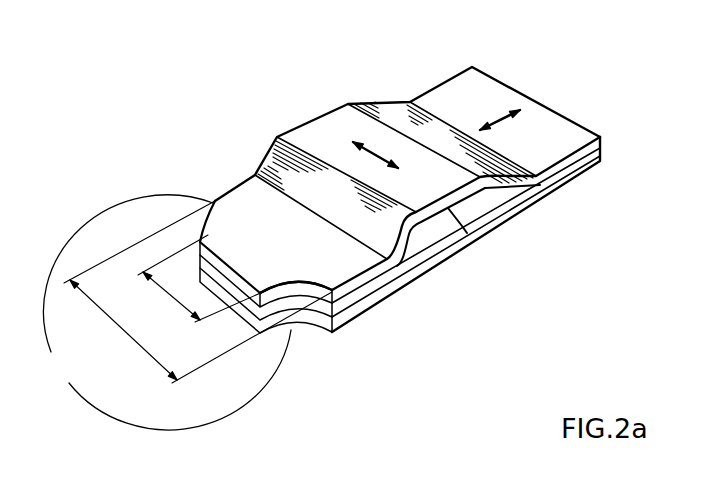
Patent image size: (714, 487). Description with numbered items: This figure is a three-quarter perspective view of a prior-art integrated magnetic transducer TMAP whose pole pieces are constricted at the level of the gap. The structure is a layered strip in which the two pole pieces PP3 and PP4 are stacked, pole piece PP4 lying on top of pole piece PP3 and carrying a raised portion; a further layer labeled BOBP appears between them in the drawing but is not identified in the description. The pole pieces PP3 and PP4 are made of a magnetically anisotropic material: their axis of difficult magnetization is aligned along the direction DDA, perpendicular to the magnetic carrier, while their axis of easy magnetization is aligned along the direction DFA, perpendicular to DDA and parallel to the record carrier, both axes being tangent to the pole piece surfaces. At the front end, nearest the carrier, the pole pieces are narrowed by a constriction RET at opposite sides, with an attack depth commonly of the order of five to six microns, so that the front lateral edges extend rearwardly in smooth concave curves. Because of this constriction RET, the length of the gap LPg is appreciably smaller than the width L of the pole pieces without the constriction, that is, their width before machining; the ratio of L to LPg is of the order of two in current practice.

The pole piece PP4 is at (332, 108).
The pole piece PP3 is at (565, 184).
The biaxially oriented polypropylene intermediate layer BOBP is at (438, 247).
The direction of easy magnetization DFA is at (389, 169).
The direction of difficult magnetization DDA is at (514, 126).
The integrated magnetic transducer TMAP is at (305, 357).
The constriction RET is at (165, 312).
The width of the pole pieces L is at (198, 292).
The length of the gap LPg is at (201, 280).